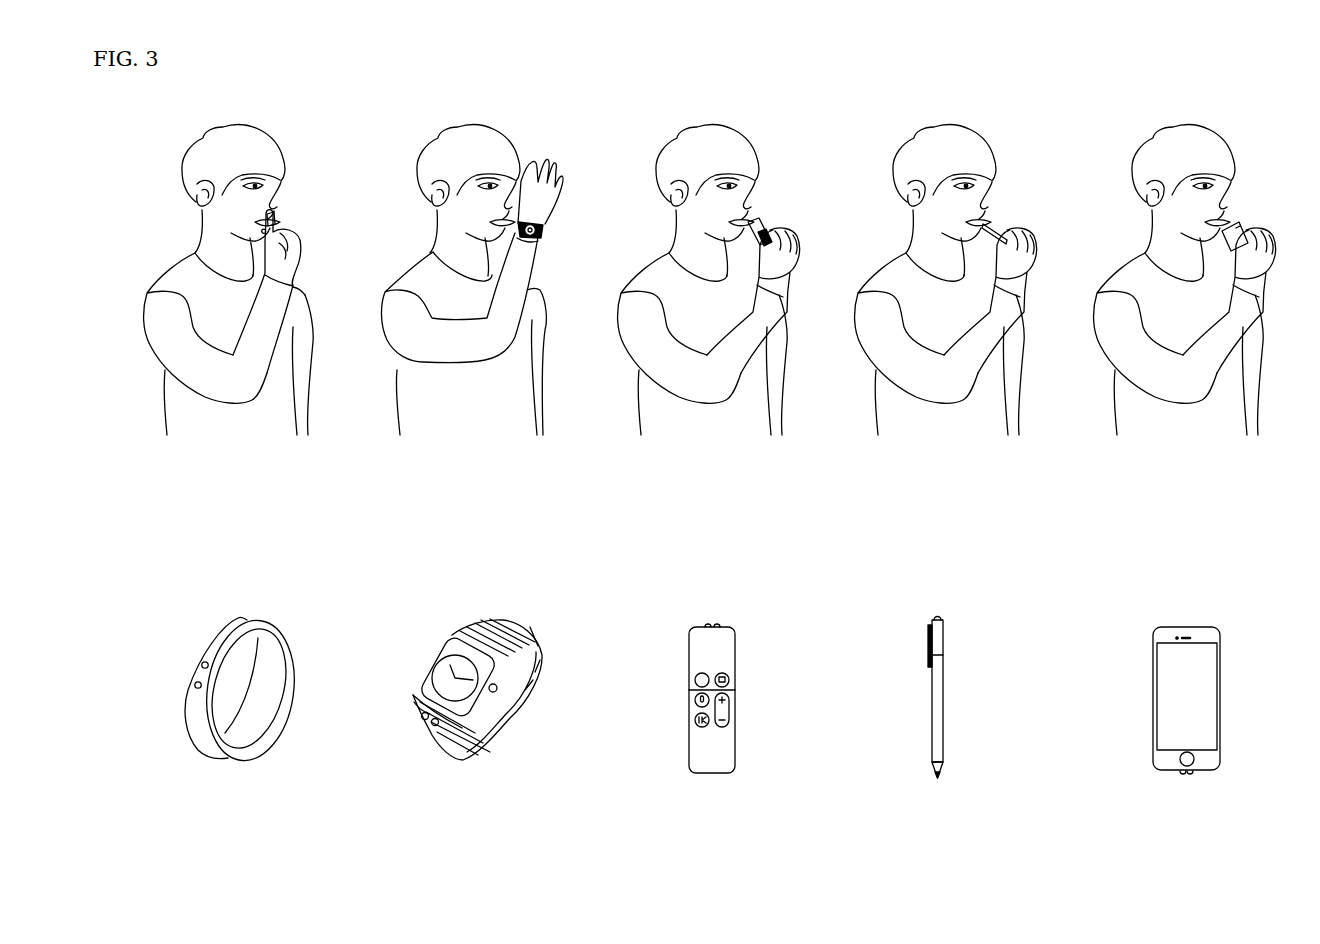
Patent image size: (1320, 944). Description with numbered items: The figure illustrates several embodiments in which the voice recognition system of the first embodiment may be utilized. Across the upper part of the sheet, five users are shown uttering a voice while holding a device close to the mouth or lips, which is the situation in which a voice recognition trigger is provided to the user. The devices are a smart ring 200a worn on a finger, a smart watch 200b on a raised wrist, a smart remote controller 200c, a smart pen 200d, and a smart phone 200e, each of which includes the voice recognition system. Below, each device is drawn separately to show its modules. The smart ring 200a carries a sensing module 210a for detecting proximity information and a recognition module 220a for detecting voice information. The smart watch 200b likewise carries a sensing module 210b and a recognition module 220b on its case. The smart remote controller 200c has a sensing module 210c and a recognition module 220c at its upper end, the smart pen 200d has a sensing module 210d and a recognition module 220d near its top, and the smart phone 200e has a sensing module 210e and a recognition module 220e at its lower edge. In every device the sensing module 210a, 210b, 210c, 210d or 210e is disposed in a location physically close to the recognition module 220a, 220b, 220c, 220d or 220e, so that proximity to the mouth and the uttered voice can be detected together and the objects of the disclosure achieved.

The smart ring 200a is at (278, 214).
The sensing module 210a is at (193, 686).
The recognition module 220a is at (198, 664).
The smart watch 200b is at (545, 226).
The sensing module 210b is at (420, 709).
The recognition module 220b is at (421, 723).
The smart remote controller 200c is at (765, 221).
The sensing module 210c is at (708, 624).
The recognition module 220c is at (718, 623).
The smart pen 200d is at (1003, 227).
The sensing module 210d is at (933, 618).
The recognition module 220d is at (940, 618).
The smart phone 200e is at (1235, 222).
The sensing module 210e is at (1182, 773).
The recognition module 220e is at (1190, 773).